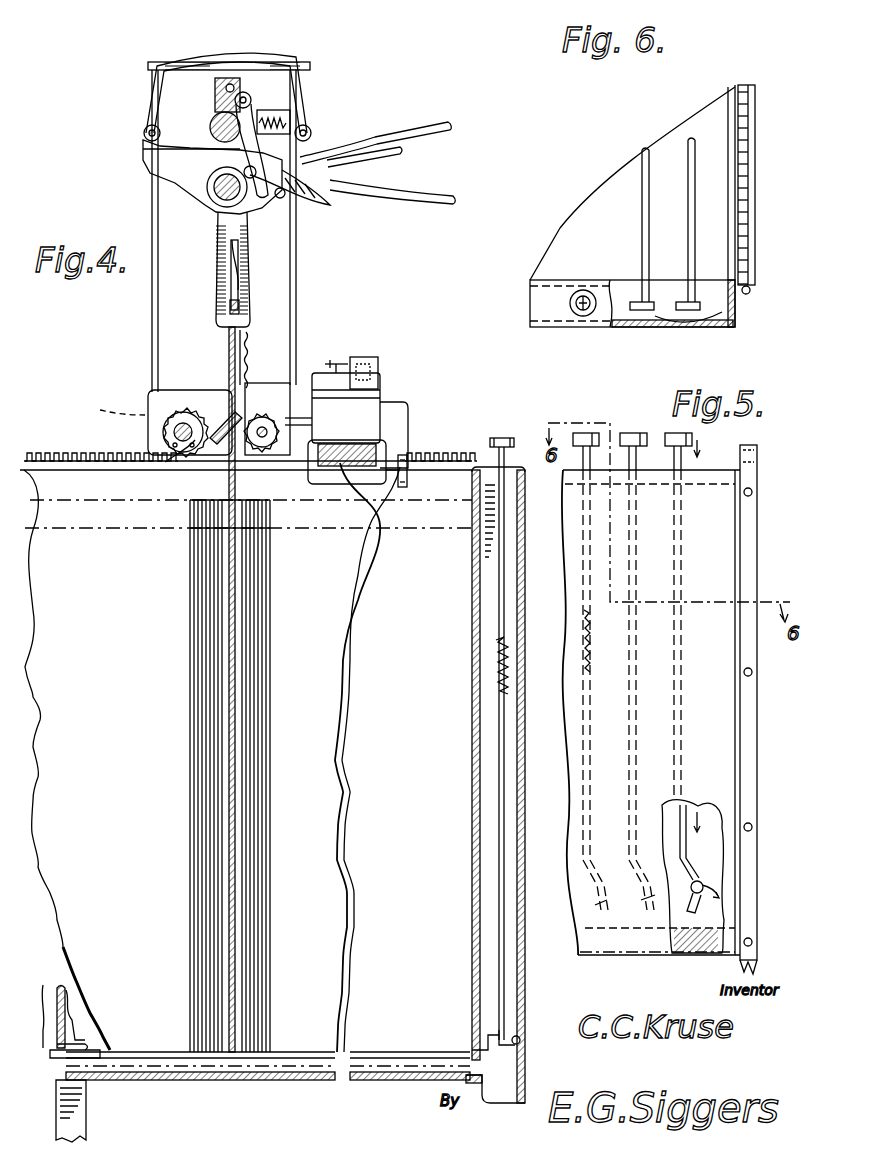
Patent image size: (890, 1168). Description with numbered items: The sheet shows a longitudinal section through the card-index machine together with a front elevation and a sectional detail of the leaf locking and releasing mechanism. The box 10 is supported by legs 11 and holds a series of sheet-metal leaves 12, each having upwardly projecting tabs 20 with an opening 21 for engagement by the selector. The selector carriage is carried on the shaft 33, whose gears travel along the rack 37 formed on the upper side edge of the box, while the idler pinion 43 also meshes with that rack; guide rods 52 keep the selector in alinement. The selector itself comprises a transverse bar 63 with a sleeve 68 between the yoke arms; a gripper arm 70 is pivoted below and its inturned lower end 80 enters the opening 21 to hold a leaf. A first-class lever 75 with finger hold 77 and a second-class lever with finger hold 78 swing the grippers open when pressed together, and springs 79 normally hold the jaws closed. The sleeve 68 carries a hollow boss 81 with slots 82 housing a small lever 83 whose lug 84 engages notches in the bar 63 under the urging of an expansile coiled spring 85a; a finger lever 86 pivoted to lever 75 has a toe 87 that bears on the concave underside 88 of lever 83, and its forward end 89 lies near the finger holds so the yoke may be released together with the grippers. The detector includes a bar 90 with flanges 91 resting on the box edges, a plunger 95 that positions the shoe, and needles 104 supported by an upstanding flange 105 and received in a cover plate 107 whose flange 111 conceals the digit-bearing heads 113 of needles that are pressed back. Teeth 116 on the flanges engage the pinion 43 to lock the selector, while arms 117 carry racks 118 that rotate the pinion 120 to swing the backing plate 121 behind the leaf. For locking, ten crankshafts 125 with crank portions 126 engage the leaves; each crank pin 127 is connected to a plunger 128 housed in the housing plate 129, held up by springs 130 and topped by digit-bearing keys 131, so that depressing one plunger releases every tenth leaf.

In FIG. 6, the box 10 is at (732, 140).
In FIG. 4, the legs 11 is at (86, 1115).
In FIG. 4, the leaves 12 is at (240, 550).
In FIG. 4, the tabs 20 is at (242, 305).
In FIG. 4, the opening 21 is at (245, 315).
In FIG. 4, the shaft 33 is at (160, 432).
In FIG. 4, the rack 37 is at (40, 452).
In FIG. 6, the rack 37 is at (750, 185).
In FIG. 4, the idler pinion 43 is at (335, 462).
In FIG. 4, the guide rods 52 is at (305, 255).
In FIG. 4, the transverse bar 63 is at (212, 108).
In FIG. 4, the sleeve 68 is at (212, 118).
In FIG. 4, the gripper arm 70 is at (220, 268).
In FIG. 4, the lever 75 is at (220, 200).
In FIG. 4, the finger hold 77 is at (445, 196).
In FIG. 4, the finger hold 78 is at (448, 122).
In FIG. 4, the springs 79 is at (300, 90).
In FIG. 4, the inturned lower end 80 is at (228, 325).
In FIG. 4, the hollow boss 81 is at (272, 110).
In FIG. 4, the slots 82 is at (246, 92).
In FIG. 4, the lever 83 is at (200, 150).
In FIG. 4, the lug 84 is at (144, 130).
In FIG. 4, the expansile coiled spring 85a is at (300, 128).
In FIG. 4, the finger lever 86 is at (315, 205).
In FIG. 4, the toe 87 is at (255, 195).
In FIG. 4, the concave underside 88 is at (207, 185).
In FIG. 4, the forward end 89 is at (385, 156).
In FIG. 4, the bar 90 is at (380, 538).
In FIG. 4, the flanges 91 is at (405, 408).
In FIG. 4, the plunger 95 is at (404, 486).
In FIG. 4, the needles 104 is at (300, 420).
In FIG. 4, the upstanding flange 105 is at (260, 359).
In FIG. 4, the cover plate 107 is at (380, 395).
In FIG. 4, the flange 111 is at (372, 357).
In FIG. 4, the head 113 is at (338, 362).
In FIG. 4, the teeth 116 is at (262, 395).
In FIG. 4, the arms 117 is at (255, 462).
In FIG. 4, the racks 118 is at (170, 465).
In FIG. 4, the pinion 120 is at (230, 410).
In FIG. 4, the backing plate 121 is at (222, 405).
In FIG. 4, the crankshafts 125 is at (57, 990).
In FIG. 4, the crank portions 126 is at (400, 1052).
In FIG. 6, the crank portions 126 is at (688, 230).
In FIG. 4, the crank pin 127 is at (499, 1037).
In FIG. 5, the crank pin 127 is at (712, 888).
In FIG. 4, the plunger 128 is at (499, 828).
In FIG. 6, the plunger 128 is at (735, 316).
In FIG. 5, the plunger 128 is at (700, 553).
In FIG. 4, the housing plate 129 is at (525, 985).
In FIG. 6, the housing plate 129 is at (665, 327).
In FIG. 5, the housing plate 129 is at (720, 745).
In FIG. 4, the springs 130 is at (490, 660).
In FIG. 5, the springs 130 is at (590, 648).
In FIG. 4, the keys 131 is at (497, 438).
In FIG. 6, the keys 131 is at (583, 316).
In FIG. 5, the keys 131 is at (633, 433).